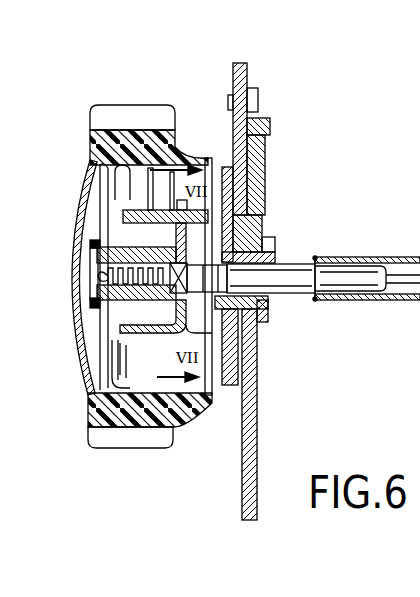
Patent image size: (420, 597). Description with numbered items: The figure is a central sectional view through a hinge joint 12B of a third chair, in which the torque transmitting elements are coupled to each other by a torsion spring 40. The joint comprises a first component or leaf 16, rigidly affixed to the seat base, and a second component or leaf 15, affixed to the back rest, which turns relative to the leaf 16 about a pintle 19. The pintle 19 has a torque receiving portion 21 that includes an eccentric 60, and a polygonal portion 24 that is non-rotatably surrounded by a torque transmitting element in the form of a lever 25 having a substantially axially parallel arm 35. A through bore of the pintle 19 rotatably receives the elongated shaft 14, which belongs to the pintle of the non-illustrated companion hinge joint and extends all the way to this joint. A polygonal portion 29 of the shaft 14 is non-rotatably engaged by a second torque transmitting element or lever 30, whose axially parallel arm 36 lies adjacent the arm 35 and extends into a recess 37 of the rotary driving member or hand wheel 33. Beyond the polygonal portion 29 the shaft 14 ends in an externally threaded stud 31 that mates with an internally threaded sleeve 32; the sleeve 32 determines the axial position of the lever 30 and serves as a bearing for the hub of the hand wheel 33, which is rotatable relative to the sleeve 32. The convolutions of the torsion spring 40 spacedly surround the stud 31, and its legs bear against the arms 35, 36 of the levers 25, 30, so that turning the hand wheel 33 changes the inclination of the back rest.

The hinge joint 12B is at (338, 130).
The shaft 14 is at (365, 278).
The second component or leaf 15 is at (246, 73).
The first component or leaf 16 is at (257, 420).
The pintle 19 is at (285, 262).
The torque receiving portion 21 is at (195, 327).
The polygonal portion 24 is at (270, 330).
The lever 25 is at (253, 227).
The polygonal portion 29 is at (80, 256).
The lever 30 is at (253, 324).
The externally threaded stud 31 is at (97, 291).
The internally threaded sleeve 32 is at (93, 299).
The hand wheel 33 is at (123, 106).
The arm 35 is at (125, 212).
The arm 36 is at (122, 339).
The recess 37 is at (150, 206).
The torsion spring 40 is at (80, 225).
The eccentric 60 is at (250, 246).